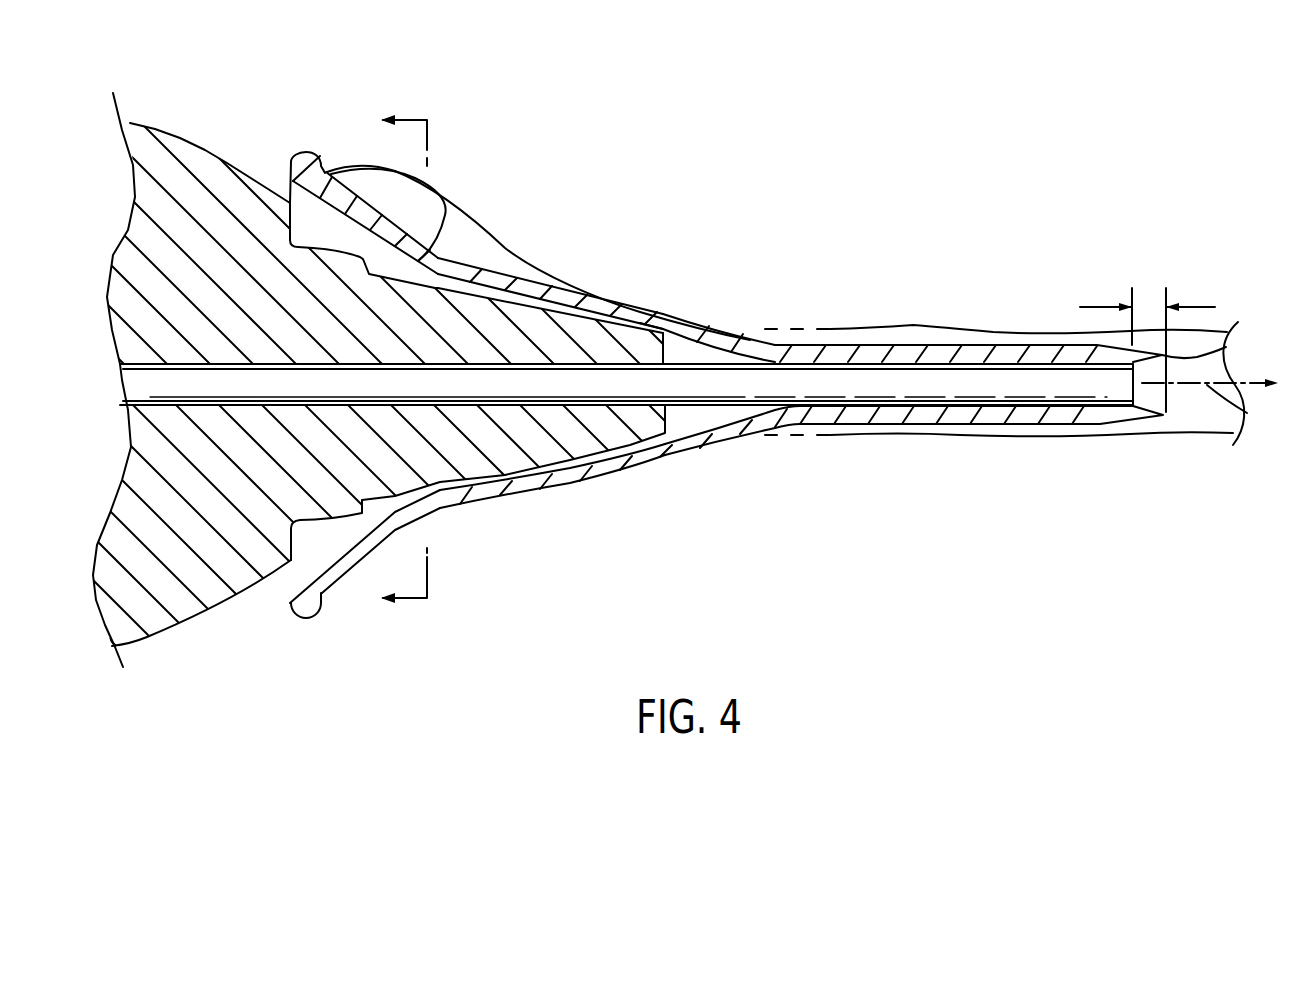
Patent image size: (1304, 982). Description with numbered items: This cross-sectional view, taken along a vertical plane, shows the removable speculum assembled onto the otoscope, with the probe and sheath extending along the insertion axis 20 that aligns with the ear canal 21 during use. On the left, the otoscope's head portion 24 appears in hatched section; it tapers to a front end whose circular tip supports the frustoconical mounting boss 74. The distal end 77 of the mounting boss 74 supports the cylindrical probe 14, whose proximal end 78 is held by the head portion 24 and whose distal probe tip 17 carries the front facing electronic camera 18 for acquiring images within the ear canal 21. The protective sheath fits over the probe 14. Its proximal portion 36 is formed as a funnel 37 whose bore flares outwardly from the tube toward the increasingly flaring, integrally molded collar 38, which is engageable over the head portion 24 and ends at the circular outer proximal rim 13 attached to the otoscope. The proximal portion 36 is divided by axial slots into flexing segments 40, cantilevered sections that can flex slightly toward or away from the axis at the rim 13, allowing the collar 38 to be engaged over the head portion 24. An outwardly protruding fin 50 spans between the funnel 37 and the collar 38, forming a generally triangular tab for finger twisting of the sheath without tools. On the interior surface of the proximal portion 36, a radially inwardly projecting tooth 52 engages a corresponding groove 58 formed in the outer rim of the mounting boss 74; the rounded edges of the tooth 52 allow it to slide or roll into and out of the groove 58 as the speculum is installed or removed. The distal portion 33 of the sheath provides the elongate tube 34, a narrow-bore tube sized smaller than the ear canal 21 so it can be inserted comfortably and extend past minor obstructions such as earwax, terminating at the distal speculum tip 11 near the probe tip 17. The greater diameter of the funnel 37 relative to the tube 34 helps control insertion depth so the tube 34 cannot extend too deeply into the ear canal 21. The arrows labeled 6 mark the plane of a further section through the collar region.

The head portion 24 is at (160, 152).
The integrally molded collar 38 is at (300, 157).
The outer proximal rim 13 is at (290, 597).
The flexing segments 40 is at (353, 207).
The section line 6- 6 is at (404, 362).
The outwardly protruding fin 50 is at (477, 237).
The radially inwardly projecting tooth 52 is at (472, 215).
The groove 58 is at (449, 196).
The frustoconical mounting boss 74 is at (567, 318).
The funnel 37 is at (637, 310).
The distal end of the mounting boss 77 is at (668, 333).
The elongate tube 34 is at (973, 352).
The cylindrical probe 14 is at (897, 375).
The distal probe tip 17 is at (1108, 388).
The front facing electronic camera 18 is at (1132, 388).
The distal portion 33 is at (1015, 428).
The proximal end of the cylindrical probe 78 is at (680, 395).
The proximal portion 36 is at (585, 492).
The ear canal 21 is at (864, 320).
The insertion axis 20 is at (1250, 410).
The distal speculum tip 11 is at (1230, 347).